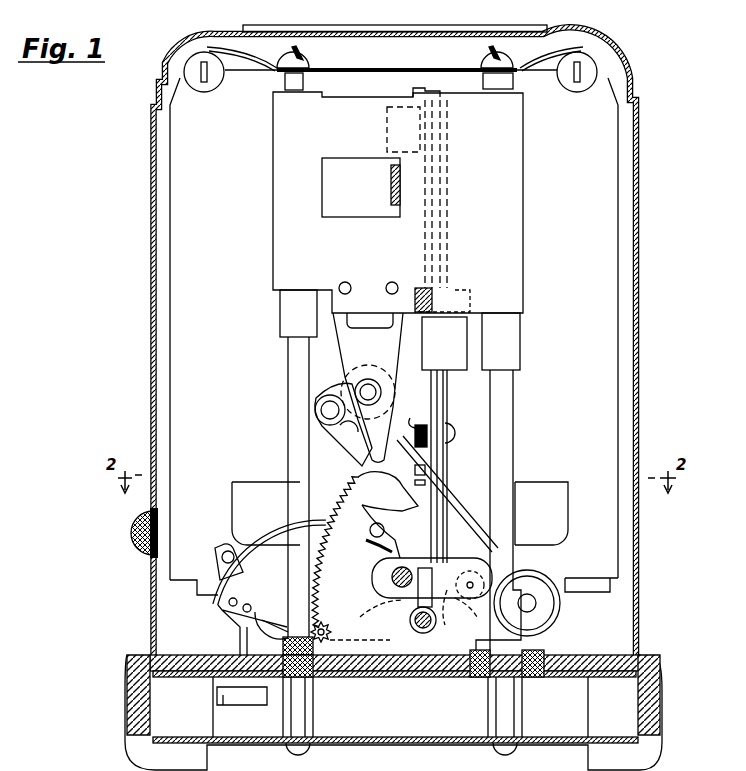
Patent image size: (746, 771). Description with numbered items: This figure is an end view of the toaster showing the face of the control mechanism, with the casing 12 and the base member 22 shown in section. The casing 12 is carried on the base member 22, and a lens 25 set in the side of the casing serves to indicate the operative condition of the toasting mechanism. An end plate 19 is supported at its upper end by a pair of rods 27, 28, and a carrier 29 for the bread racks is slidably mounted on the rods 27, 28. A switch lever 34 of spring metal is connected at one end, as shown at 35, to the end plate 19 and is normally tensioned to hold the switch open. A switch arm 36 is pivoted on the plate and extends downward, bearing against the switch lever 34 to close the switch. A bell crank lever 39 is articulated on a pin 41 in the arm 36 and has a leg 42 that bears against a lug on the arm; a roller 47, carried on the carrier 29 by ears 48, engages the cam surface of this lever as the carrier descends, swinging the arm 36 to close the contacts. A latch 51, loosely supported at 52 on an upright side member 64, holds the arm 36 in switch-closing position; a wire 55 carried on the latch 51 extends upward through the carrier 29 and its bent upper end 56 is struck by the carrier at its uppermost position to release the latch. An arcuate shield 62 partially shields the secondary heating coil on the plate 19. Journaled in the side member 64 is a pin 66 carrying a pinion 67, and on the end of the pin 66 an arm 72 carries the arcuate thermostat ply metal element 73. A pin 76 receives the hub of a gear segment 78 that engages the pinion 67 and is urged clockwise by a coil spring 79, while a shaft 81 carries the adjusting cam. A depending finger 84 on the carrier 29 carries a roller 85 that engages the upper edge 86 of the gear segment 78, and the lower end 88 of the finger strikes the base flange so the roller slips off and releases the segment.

The casing 12 is at (639, 146).
The end plate 19 is at (394, 332).
The base member 22 is at (652, 656).
The lens 25 is at (133, 532).
The rod 27 is at (504, 90).
The rod 28 is at (290, 88).
The carrier 29 is at (398, 210).
The switch lever 34 is at (485, 484).
The connection of switch lever 35 is at (320, 410).
The switch arm 36 is at (445, 391).
The bell crank lever 39 is at (446, 428).
The pin 41 is at (447, 476).
The leg 42 is at (432, 480).
The roller 47 is at (452, 290).
The ears 48 is at (475, 292).
The latch 51 is at (416, 589).
The latch support 52 is at (416, 628).
The wire 55 is at (424, 212).
The bent upper end of wire 56 is at (425, 90).
The arcuate shield 62 is at (236, 545).
The upright side member 64 is at (381, 620).
The pin 66 is at (340, 622).
The pinion 67 is at (360, 647).
The arm 72 is at (265, 620).
The thermostat ply metal element 73 is at (269, 587).
The pin 76 is at (471, 600).
The gear segment 78 is at (356, 552).
The coil spring 79 is at (460, 616).
The shaft 81 is at (400, 588).
The finger 84 is at (348, 347).
The roller 85 is at (346, 380).
The upper edge of gear segment 86 is at (404, 488).
The lower end of finger 88 is at (365, 452).